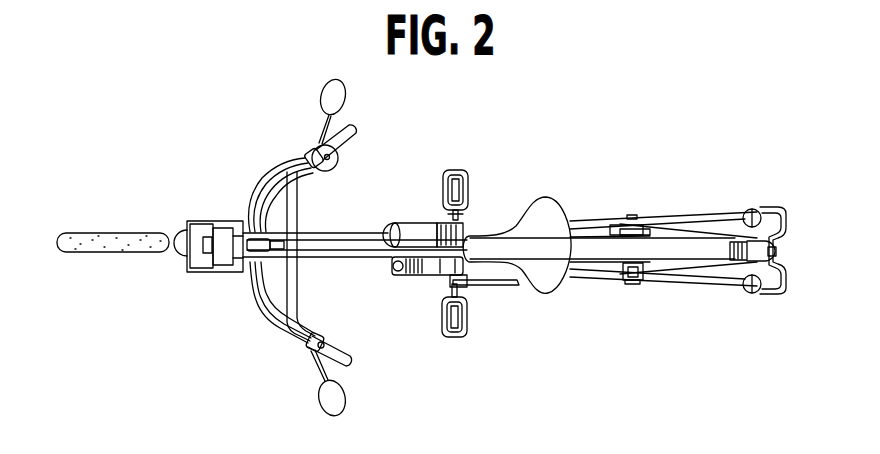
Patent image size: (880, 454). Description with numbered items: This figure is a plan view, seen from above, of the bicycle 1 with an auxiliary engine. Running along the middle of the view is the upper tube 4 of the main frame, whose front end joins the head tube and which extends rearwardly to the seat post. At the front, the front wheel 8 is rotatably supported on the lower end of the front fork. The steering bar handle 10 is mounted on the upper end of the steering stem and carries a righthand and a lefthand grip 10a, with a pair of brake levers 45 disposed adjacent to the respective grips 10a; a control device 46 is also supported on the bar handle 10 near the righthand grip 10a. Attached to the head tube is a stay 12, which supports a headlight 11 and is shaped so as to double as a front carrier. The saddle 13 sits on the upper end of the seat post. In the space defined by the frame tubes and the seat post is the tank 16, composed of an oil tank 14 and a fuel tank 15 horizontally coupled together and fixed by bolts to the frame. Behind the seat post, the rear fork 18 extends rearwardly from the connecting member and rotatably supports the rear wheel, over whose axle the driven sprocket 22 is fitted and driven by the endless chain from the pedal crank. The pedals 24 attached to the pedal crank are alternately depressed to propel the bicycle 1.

The bicycle 1 is at (517, 180).
The upper tube 4 is at (335, 251).
The front wheel 8 is at (83, 240).
The steering bar handle 10 is at (287, 288).
The grips 10a is at (348, 143).
The headlight 11 is at (191, 246).
The stay 12 is at (207, 268).
The saddle 13 is at (547, 297).
The oil tank 14 is at (421, 266).
The fuel tank 15 is at (410, 231).
The tank 16 is at (436, 232).
The rear fork 18 is at (592, 221).
The driven sprocket 22 is at (643, 250).
The pedals 24 is at (468, 173).
The brake levers 45 is at (341, 117).
The control device 46 is at (302, 157).